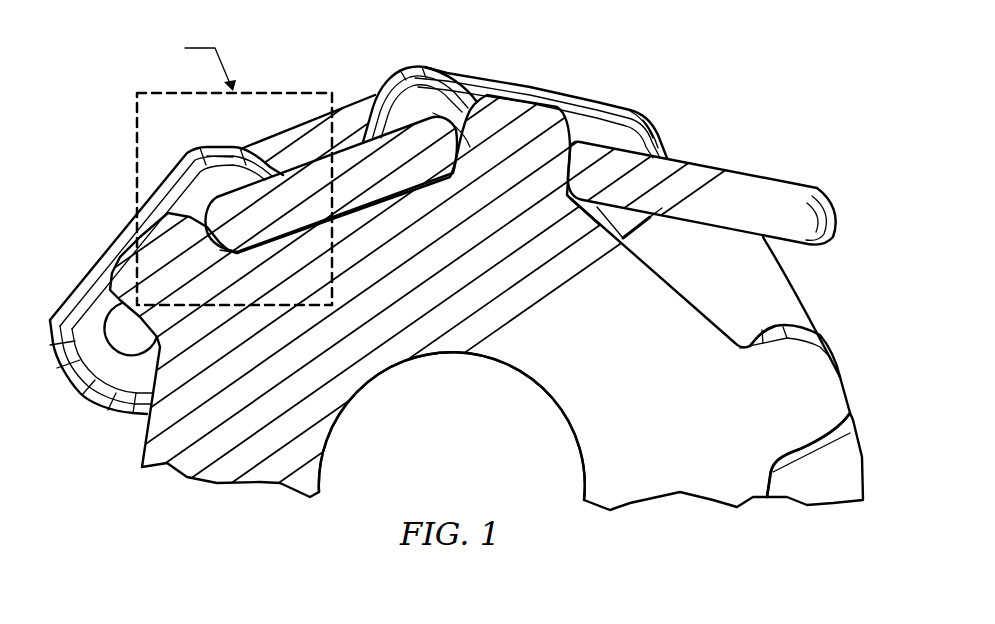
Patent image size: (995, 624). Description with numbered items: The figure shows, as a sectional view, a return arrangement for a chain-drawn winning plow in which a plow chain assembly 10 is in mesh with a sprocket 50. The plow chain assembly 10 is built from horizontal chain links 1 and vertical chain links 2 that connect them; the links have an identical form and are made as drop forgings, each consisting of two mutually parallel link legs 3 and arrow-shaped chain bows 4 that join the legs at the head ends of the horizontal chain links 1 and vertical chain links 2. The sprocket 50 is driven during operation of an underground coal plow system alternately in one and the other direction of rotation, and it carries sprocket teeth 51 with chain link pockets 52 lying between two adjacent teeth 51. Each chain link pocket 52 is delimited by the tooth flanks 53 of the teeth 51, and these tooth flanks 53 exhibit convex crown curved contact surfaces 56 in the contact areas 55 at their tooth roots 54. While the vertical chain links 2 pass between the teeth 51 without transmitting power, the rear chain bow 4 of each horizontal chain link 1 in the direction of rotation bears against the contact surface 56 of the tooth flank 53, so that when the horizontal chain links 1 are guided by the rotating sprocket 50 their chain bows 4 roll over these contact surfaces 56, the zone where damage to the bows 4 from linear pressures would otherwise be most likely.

The plow chain assembly 10 is at (723, 50).
The horizontal chain link 1 is at (347, 102).
The vertical chain link 2 is at (629, 88).
The link leg 3 is at (302, 187).
The chain bow 4 is at (220, 150).
The sprocket 50 is at (453, 343).
The sprocket tooth 51 is at (512, 112).
The chain link pocket 52 is at (766, 274).
The tooth flank 53 is at (573, 127).
The tooth root 54 is at (560, 175).
The contact area 55 is at (561, 201).
The contact surface 56 is at (224, 255).